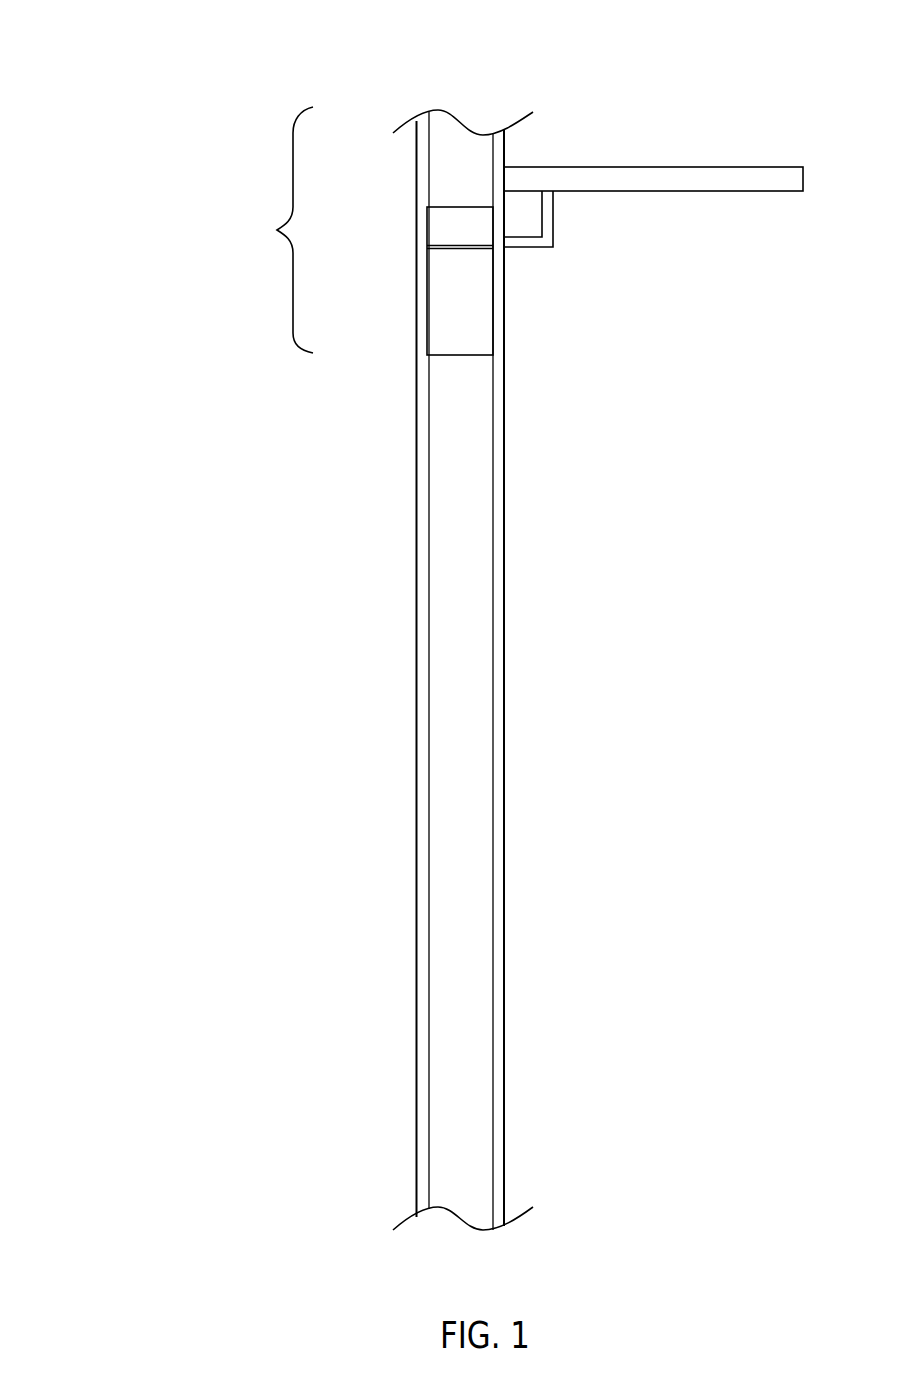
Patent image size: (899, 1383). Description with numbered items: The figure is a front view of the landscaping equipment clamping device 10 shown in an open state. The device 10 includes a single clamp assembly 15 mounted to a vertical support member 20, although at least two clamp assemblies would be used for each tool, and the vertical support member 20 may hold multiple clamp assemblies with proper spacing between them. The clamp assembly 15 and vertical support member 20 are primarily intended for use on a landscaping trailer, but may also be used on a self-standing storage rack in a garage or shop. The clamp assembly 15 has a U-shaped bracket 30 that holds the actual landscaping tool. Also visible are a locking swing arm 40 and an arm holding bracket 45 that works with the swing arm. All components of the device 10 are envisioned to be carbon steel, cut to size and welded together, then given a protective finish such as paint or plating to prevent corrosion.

The landscaping equipment clamping device 10 is at (113, 185).
The clamp assembly 15 is at (265, 230).
The vertical support member 20 is at (460, 633).
The U-shaped bracket 30 is at (460, 287).
The locking swing arm 40 is at (670, 179).
The arm holding bracket 45 is at (553, 240).